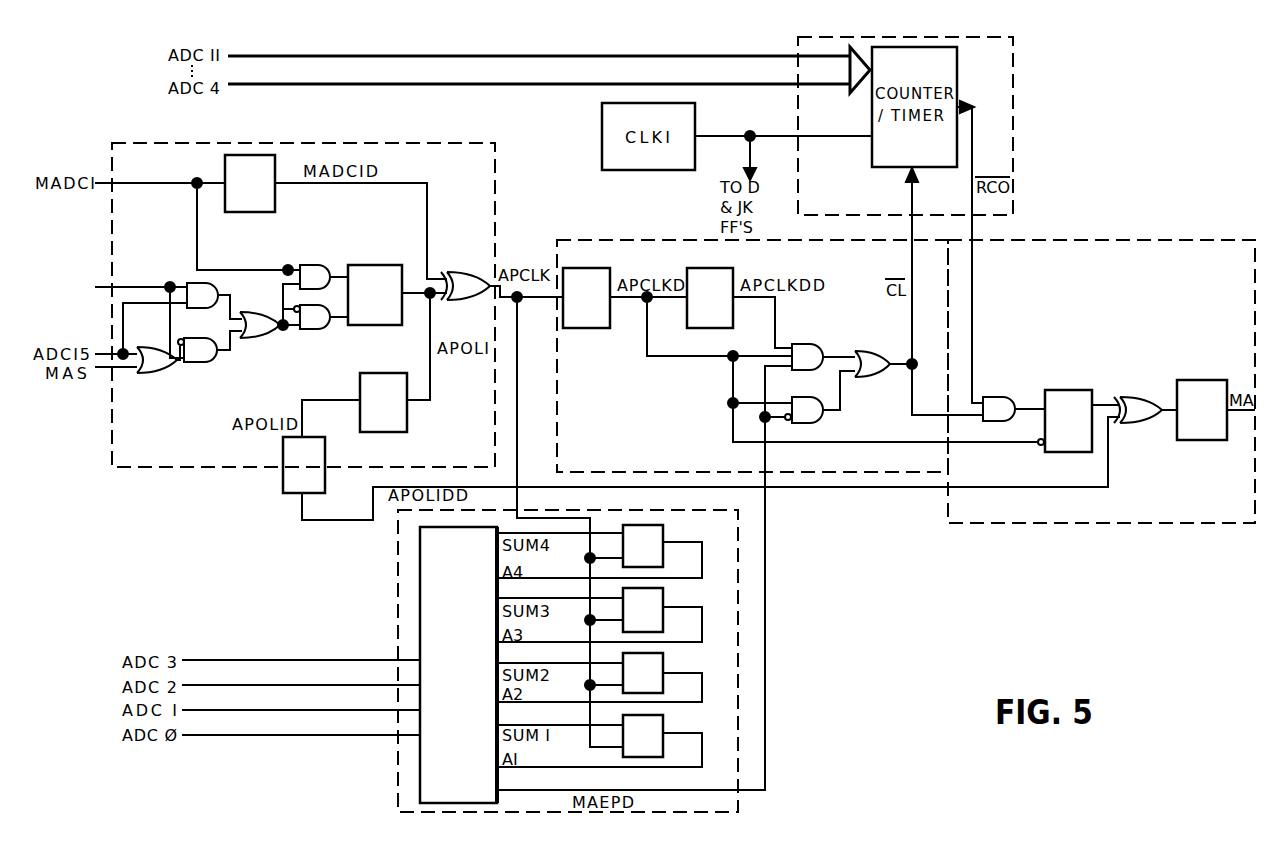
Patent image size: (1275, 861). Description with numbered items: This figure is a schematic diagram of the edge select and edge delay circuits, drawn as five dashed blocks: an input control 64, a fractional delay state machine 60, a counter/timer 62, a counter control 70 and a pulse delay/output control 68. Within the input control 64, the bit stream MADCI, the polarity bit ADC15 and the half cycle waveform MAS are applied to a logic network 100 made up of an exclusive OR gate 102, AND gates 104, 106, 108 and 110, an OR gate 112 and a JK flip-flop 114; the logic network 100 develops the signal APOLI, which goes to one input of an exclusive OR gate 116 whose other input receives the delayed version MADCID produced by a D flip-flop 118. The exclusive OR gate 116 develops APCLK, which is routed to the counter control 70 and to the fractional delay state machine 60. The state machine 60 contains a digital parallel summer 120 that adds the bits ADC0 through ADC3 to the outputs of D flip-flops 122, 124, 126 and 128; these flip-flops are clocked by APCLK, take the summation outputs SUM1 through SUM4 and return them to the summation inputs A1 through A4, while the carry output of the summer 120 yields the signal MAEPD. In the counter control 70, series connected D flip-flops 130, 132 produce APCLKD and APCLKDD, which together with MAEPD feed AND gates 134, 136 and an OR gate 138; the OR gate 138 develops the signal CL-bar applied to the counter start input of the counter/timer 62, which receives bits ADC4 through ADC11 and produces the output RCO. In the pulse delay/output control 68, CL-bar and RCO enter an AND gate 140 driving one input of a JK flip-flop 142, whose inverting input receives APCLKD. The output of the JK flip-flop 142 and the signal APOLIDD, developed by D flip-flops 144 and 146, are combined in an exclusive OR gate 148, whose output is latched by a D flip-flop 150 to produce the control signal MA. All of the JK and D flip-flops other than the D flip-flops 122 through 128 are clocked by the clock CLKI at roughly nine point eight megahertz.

The fractional delay state machine 60 is at (398, 612).
The counter/timer 62 is at (1003, 93).
The input control 64 is at (160, 455).
The pulse delay/output control 68 is at (1057, 515).
The counter control 70 is at (660, 244).
The logic network 100 is at (250, 380).
The exclusive OR gate 102 is at (160, 373).
The AND gate 104 is at (195, 283).
The AND gate 106 is at (200, 362).
The AND gate 108 is at (318, 265).
The AND gate 110 is at (315, 329).
The OR gate 112 is at (255, 338).
The JK flip-flop 114 is at (380, 265).
The exclusive OR gate 116 is at (470, 272).
The D flip-flop 118 is at (262, 212).
The digital parallel summer 120 is at (440, 555).
The D flip-flop 122 is at (663, 724).
The D flip-flop 124 is at (663, 661).
The D flip-flop 126 is at (663, 597).
The D flip-flop 128 is at (663, 533).
The D flip-flop 130 is at (583, 328).
The D flip-flop 132 is at (718, 270).
The AND gate 134 is at (822, 315).
The AND gate 136 is at (810, 423).
The OR gate 138 is at (880, 330).
The AND gate 140 is at (1017, 365).
The JK flip-flop 142 is at (1070, 390).
The D flip-flop 144 is at (360, 380).
The D flip-flop 146 is at (283, 455).
The exclusive OR gate 148 is at (1140, 397).
The D flip-flop 150 is at (1205, 380).